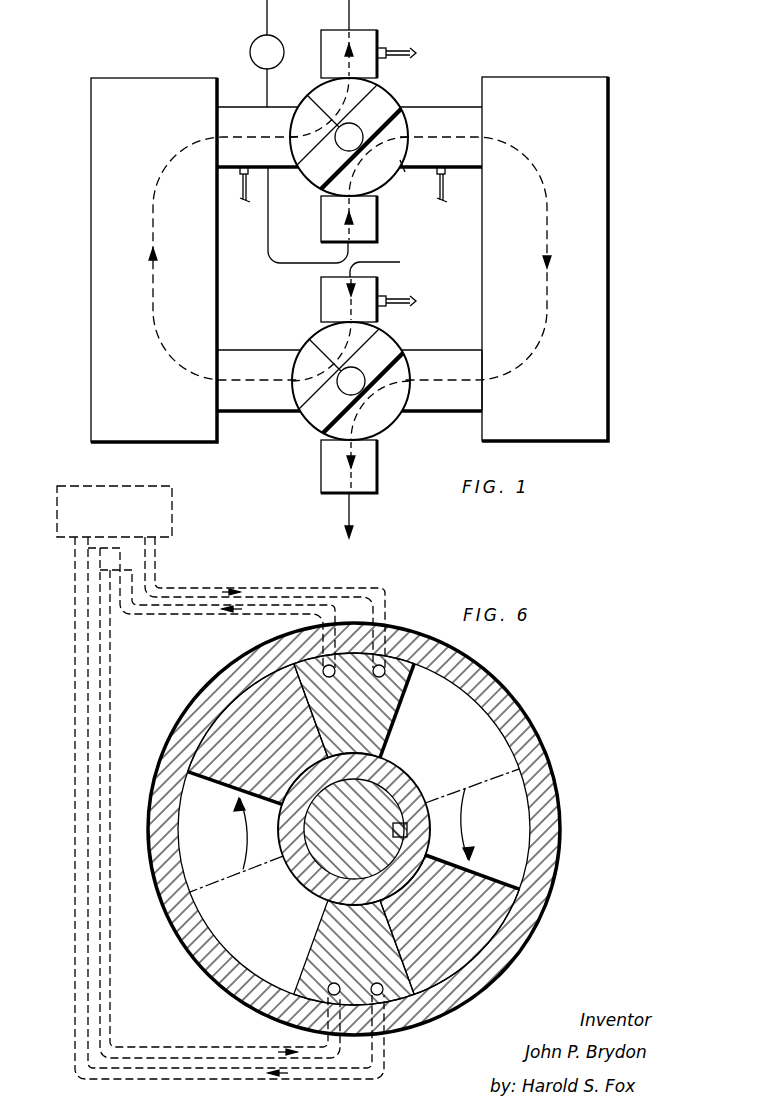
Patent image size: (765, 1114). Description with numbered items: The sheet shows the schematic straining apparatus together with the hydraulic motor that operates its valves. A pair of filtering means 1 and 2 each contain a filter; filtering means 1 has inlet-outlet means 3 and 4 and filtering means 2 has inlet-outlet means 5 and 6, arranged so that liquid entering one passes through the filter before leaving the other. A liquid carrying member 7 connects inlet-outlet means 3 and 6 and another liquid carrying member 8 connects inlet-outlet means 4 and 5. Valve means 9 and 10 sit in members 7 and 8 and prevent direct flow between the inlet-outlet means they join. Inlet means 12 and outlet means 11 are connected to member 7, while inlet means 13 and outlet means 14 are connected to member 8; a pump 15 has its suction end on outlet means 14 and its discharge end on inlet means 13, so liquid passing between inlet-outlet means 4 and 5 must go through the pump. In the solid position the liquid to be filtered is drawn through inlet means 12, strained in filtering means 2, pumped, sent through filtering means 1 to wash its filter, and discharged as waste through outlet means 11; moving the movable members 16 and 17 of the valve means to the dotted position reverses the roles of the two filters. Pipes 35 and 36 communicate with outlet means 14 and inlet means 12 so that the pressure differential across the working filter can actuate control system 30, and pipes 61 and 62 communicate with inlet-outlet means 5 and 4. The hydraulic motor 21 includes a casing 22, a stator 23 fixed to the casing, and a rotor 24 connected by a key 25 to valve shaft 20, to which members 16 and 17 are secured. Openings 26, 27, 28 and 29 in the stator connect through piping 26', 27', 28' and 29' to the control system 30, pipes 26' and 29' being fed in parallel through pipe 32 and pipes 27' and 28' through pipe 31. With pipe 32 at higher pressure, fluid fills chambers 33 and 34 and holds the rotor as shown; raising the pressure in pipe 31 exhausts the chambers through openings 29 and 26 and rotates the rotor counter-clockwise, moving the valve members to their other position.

In FIG. 1, the filtering means 1 is at (593, 227).
In FIG. 1, the filtering means 2 is at (97, 250).
In FIG. 1, the inlet-outlet means 3 is at (480, 397).
In FIG. 1, the inlet-outlet means 4 is at (476, 118).
In FIG. 1, the inlet-outlet means 5 is at (219, 107).
In FIG. 1, the inlet-outlet means 6 is at (221, 397).
In FIG. 1, the liquid carrying member 7 is at (415, 402).
In FIG. 1, the liquid carrying member 8 is at (425, 165).
In FIG. 1, the valve means 9 is at (398, 372).
In FIG. 1, the valve means 10 is at (397, 128).
In FIG. 1, the outlet means 11 is at (377, 487).
In FIG. 1, the inlet means 12 is at (321, 291).
In FIG. 1, the inlet means 13 is at (378, 228).
In FIG. 1, the outlet means 14 is at (359, 36).
In FIG. 1, the pump 15 is at (256, 40).
In FIG. 1, the movable member 16 is at (318, 412).
In FIG. 1, the movable member 17 is at (313, 173).
In FIG. 1, the pipe 35 is at (397, 50).
In FIG. 1, the pipe 36 is at (402, 300).
In FIG. 1, the pipe 61 is at (245, 202).
In FIG. 1, the pipe 62 is at (442, 202).
In FIG. 6, the valve shaft 20 is at (369, 812).
In FIG. 6, the hydraulic motor 21 is at (494, 672).
In FIG. 6, the casing 22 is at (507, 710).
In FIG. 6, the stator 23 is at (381, 720).
In FIG. 6, the rotor 24 is at (228, 733).
In FIG. 6, the key 25 is at (409, 830).
In FIG. 6, the opening 26 is at (400, 635).
In FIG. 6, the opening 27 is at (284, 651).
In FIG. 6, the opening 28 is at (409, 1017).
In FIG. 6, the opening 29 is at (309, 963).
In FIG. 6, the pipe 26' is at (270, 602).
In FIG. 6, the pipe 27' is at (211, 608).
In FIG. 6, the pipe 28' is at (230, 806).
In FIG. 6, the pipe 29' is at (220, 803).
In FIG. 6, the control system 30 is at (173, 517).
In FIG. 6, the pipe 31 is at (80, 540).
In FIG. 6, the pipe 32 is at (150, 548).
In FIG. 6, the chamber 33 is at (212, 906).
In FIG. 6, the chamber 34 is at (510, 833).